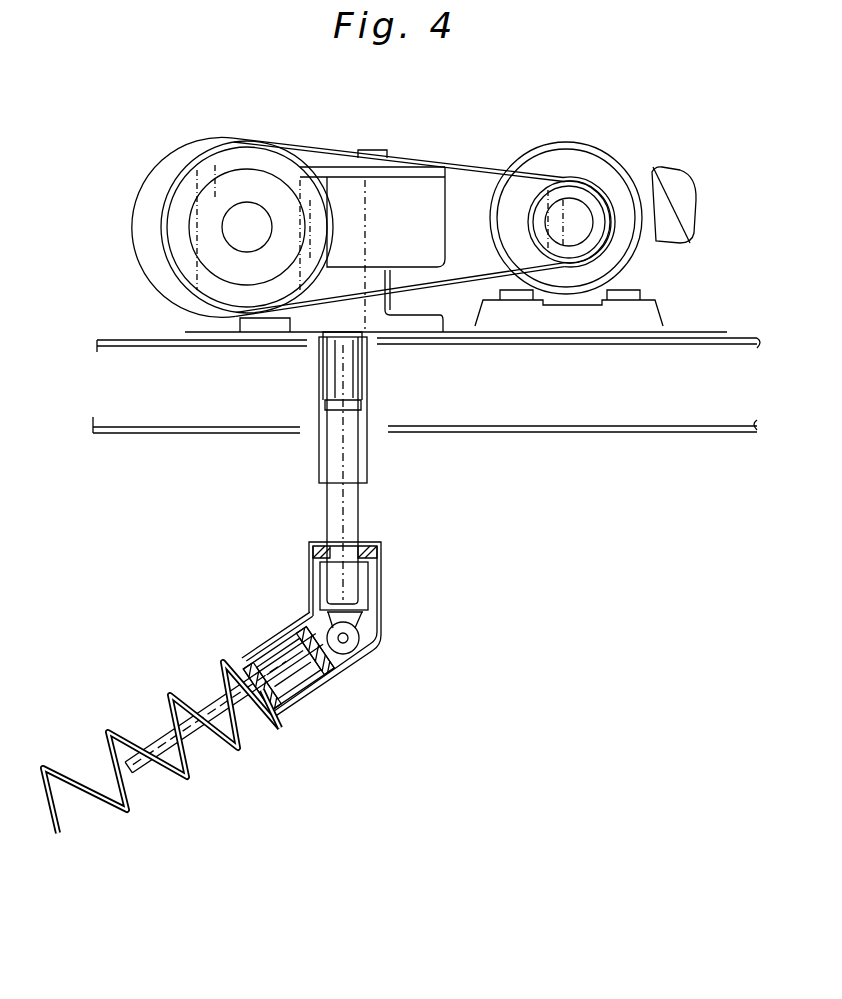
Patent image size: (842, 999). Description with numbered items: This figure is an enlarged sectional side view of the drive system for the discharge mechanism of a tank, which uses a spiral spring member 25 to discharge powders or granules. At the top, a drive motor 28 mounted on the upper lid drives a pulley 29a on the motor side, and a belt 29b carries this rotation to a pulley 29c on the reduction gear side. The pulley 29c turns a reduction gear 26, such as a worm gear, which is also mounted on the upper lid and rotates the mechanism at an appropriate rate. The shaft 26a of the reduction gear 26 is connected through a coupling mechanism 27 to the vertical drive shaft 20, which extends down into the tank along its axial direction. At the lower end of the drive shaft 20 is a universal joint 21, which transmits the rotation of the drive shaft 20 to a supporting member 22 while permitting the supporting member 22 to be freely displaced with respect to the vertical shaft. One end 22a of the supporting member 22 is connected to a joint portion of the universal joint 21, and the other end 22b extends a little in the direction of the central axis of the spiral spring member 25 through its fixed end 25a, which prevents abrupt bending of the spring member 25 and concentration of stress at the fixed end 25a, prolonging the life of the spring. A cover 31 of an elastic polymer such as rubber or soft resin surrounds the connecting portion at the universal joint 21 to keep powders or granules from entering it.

The drive shaft 20 is at (358, 501).
The universal joint 21 is at (368, 664).
The supporting member 22 is at (312, 702).
The one end of the supporting member 22a is at (330, 684).
The other end of the supporting member 22b is at (142, 776).
The spiral spring member 25 is at (126, 812).
The one end of the spiral spring member 25a is at (280, 730).
The reduction gear 26 is at (362, 150).
The shaft of the reduction gear 26a is at (335, 380).
The coupling mechanism 27 is at (367, 455).
The drive motor 28 is at (616, 153).
The pulley on the motor side 29a is at (606, 250).
The belt 29b is at (482, 168).
The pulley on the reduction gear side 29c is at (252, 147).
The cover 31 is at (381, 594).